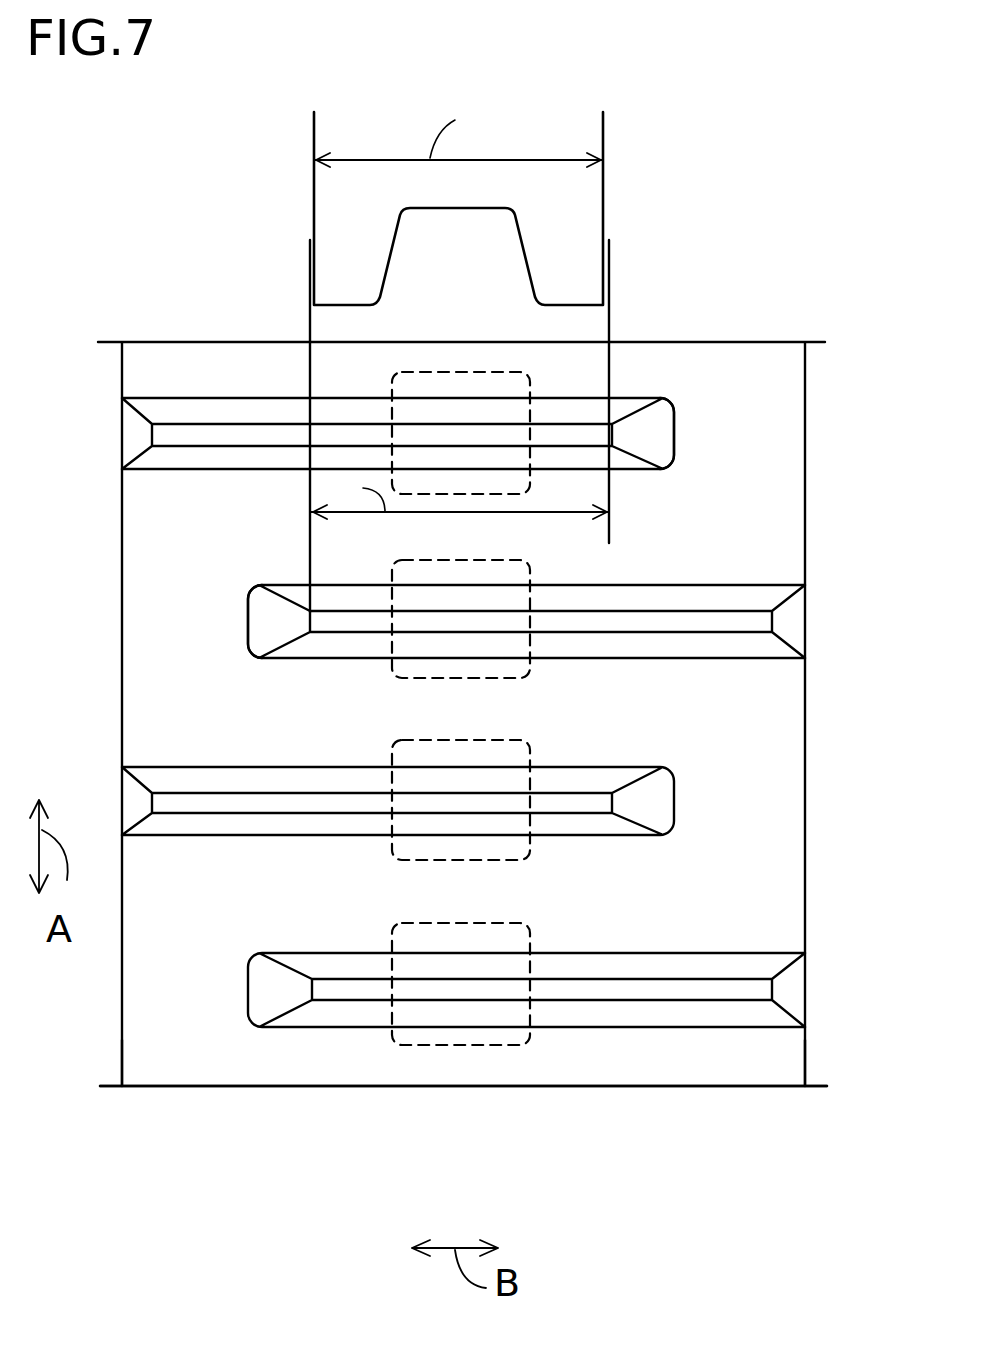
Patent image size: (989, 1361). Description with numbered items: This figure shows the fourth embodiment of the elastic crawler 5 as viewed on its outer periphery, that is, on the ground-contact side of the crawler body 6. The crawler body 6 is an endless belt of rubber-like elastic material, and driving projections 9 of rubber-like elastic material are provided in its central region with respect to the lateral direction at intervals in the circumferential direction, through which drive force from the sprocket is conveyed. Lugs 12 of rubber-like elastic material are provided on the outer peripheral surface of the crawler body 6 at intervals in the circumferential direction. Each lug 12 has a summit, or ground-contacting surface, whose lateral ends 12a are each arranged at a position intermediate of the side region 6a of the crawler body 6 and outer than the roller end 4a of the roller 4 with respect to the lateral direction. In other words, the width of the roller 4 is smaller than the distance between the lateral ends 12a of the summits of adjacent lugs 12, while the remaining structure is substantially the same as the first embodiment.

The roller 4 is at (603, 140).
The roller end 4a is at (312, 232).
The elastic crawler 5 is at (829, 322).
The crawler body 6 is at (448, 1080).
The side region 6a is at (246, 1111).
The driving projection 9 is at (459, 372).
The lug 12 is at (204, 397).
The lateral end 12a is at (618, 422).